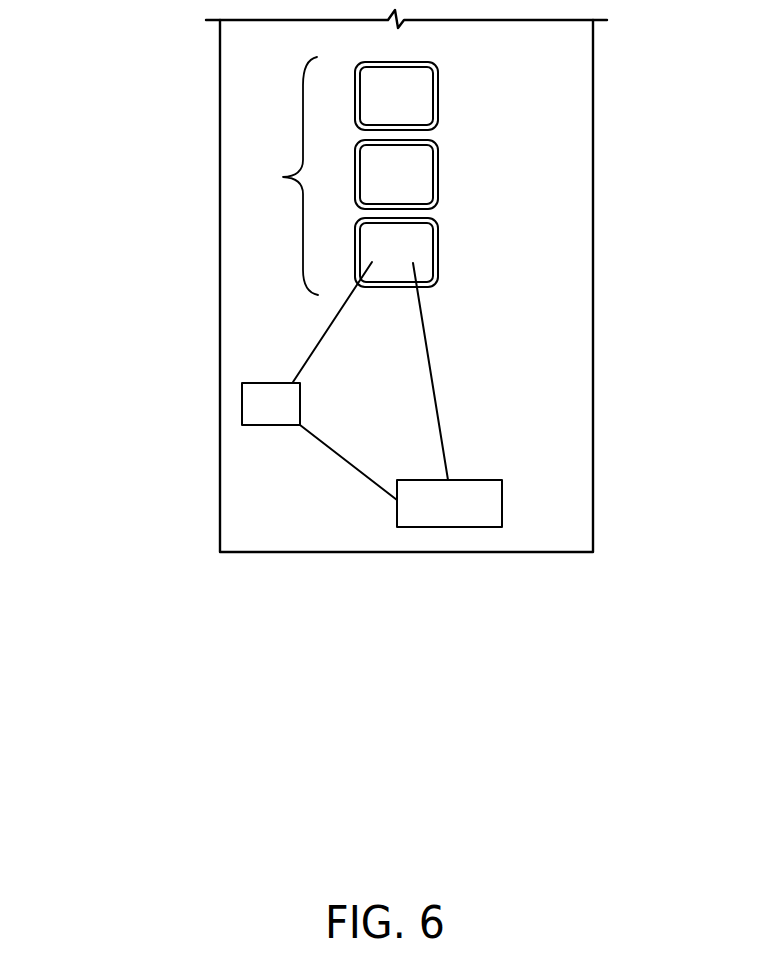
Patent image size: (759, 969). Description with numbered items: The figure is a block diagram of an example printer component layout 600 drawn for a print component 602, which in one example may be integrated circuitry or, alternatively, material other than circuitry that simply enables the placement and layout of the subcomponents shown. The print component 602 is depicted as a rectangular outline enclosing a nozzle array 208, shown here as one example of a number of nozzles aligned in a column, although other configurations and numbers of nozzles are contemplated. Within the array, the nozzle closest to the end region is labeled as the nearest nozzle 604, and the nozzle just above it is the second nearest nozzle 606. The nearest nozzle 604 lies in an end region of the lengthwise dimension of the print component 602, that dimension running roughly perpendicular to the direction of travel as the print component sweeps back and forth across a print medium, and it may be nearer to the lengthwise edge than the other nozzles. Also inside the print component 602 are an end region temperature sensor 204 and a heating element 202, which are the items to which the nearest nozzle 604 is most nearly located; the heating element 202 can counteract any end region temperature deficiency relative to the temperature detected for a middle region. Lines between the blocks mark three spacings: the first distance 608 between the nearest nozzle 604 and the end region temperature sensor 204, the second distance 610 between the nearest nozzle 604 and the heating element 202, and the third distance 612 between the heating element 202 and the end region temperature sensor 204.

The printer component layout 600 is at (362, 892).
The print component 602 is at (220, 58).
The nozzle array 208 is at (416, 163).
The second nearest nozzle 606 is at (440, 163).
The nearest nozzle 604 is at (440, 250).
The end region temperature sensor 204 is at (260, 407).
The heating element 202 is at (445, 507).
The first distance 608 is at (322, 333).
The second distance 610 is at (433, 370).
The third distance 612 is at (325, 448).